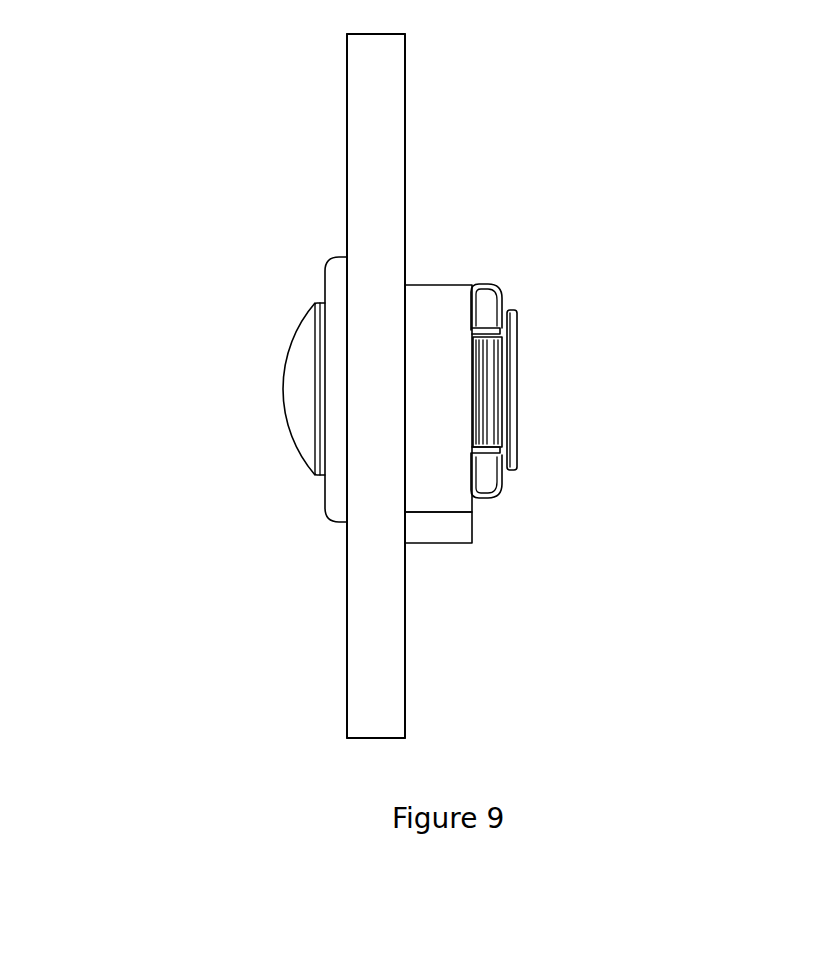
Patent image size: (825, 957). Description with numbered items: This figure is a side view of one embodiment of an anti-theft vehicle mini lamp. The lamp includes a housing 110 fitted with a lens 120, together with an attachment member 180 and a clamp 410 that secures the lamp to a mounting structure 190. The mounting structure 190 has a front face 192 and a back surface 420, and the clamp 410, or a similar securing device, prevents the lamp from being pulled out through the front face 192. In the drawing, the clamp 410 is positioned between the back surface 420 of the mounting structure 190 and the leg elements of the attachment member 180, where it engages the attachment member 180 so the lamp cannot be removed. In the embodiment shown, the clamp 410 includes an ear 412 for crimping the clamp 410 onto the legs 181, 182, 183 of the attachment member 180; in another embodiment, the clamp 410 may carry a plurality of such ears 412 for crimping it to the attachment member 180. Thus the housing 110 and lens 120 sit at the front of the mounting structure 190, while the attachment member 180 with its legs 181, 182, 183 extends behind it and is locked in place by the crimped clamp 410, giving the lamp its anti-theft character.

The mounting structure 190 is at (382, 118).
The front face 192 is at (347, 163).
The back surface 420 is at (405, 162).
The clamp 410 is at (448, 296).
The ear 412 is at (460, 522).
The leg 181 is at (499, 292).
The leg 183 is at (495, 488).
The housing 110 is at (517, 363).
The leg 182 is at (495, 404).
The lens 120 is at (290, 408).
The attachment member 180 is at (337, 520).